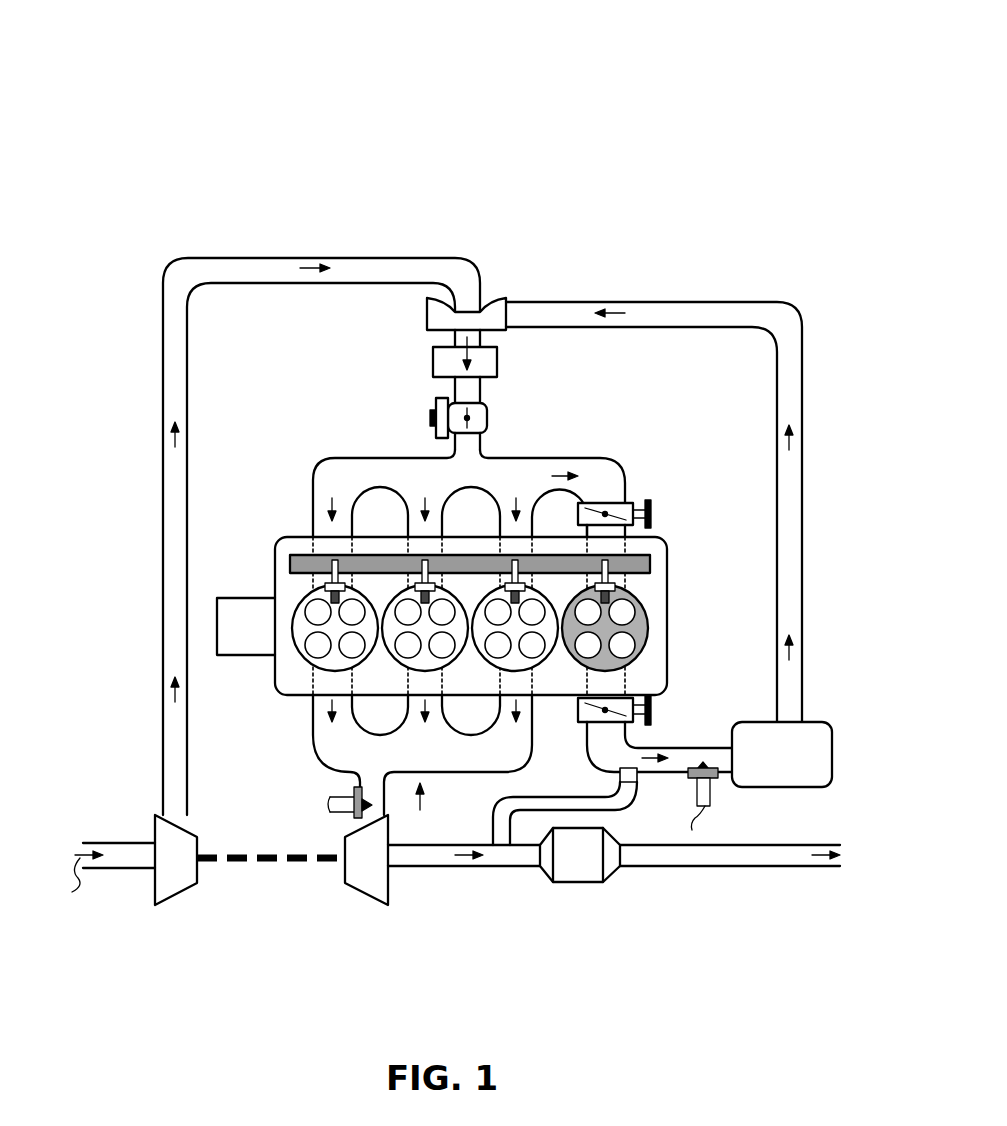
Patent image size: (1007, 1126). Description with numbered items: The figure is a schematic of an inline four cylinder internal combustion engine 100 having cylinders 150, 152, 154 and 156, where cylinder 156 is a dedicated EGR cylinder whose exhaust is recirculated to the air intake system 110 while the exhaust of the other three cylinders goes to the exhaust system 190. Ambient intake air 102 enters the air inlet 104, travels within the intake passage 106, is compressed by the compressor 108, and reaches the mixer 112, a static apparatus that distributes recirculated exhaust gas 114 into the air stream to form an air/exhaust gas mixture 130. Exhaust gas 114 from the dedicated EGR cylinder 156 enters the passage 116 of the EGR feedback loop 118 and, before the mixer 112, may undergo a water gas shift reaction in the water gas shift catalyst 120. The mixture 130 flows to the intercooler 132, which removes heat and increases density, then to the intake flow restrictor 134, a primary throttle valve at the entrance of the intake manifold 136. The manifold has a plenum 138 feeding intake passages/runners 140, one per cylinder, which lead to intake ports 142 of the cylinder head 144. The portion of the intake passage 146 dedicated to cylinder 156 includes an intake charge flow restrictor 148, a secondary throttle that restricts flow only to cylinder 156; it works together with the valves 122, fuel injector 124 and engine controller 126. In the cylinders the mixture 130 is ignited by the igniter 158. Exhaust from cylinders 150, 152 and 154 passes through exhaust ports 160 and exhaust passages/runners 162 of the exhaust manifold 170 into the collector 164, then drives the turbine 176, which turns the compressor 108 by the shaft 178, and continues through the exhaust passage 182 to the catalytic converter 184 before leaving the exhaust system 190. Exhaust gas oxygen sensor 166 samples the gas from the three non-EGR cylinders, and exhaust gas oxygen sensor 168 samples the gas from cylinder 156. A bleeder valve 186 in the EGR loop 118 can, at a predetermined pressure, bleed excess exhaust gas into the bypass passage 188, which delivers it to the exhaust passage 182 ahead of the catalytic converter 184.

The internal combustion engine 100 is at (230, 120).
The ambient intake air 102 is at (95, 850).
The air inlet 104 is at (73, 895).
The intake passage 106 is at (168, 370).
The compressor 108 is at (174, 879).
The air intake system 110 is at (510, 215).
The mixer 112 is at (470, 318).
The exhaust gas 114 is at (605, 741).
The passage 116 is at (795, 372).
The EGR feedback loop 118 is at (823, 542).
The water gas shift catalyst 120 is at (760, 776).
The valves 122 is at (624, 612).
The fuel injector 124 is at (636, 563).
The engine controller 126 is at (442, 616).
The air/exhaust gas mixture 130 is at (482, 362).
The intercooler 132 is at (429, 378).
The intake flow restrictor 134 is at (429, 424).
The intake manifold 136 is at (620, 448).
The plenum 138 is at (545, 458).
The intake passages/runners 140 is at (313, 512).
The intake port 142 is at (508, 540).
The cylinder head 144 is at (276, 688).
The intake passage portion 146 is at (537, 474).
The intake charge flow restrictor 148 is at (633, 499).
The cylinder 150 is at (345, 588).
The cylinder 152 is at (443, 588).
The cylinder 154 is at (532, 588).
The dedicated EGR cylinder 156 is at (650, 662).
The igniter 158 is at (318, 568).
The exhaust ports 160 is at (508, 688).
The exhaust passages/runners 162 is at (313, 708).
The collector 164 is at (322, 760).
The exhaust gas oxygen sensor 166 is at (316, 803).
The exhaust gas oxygen sensor 168 is at (636, 786).
The exhaust manifold 170 is at (422, 812).
The turbine 176 is at (367, 879).
The shaft 178 is at (271, 874).
The exhaust passage 182 is at (464, 873).
The catalytic converter 184 is at (580, 855).
The bleeder valve 186 is at (620, 778).
The bypass passage 188 is at (505, 822).
The exhaust system 190 is at (553, 936).